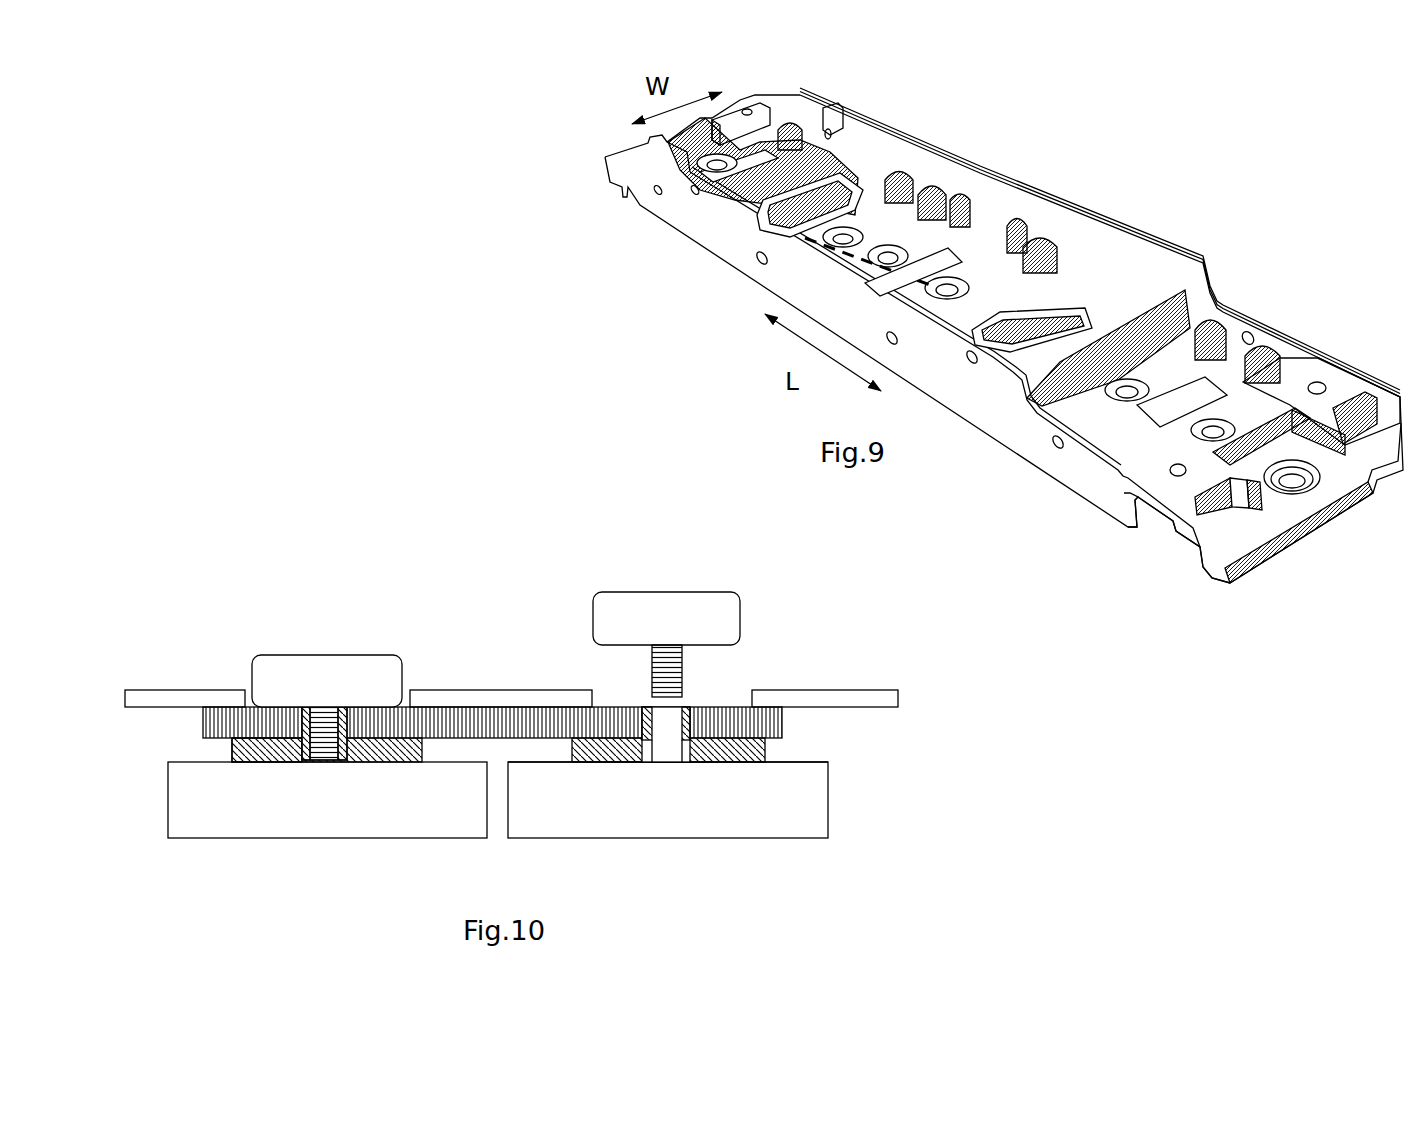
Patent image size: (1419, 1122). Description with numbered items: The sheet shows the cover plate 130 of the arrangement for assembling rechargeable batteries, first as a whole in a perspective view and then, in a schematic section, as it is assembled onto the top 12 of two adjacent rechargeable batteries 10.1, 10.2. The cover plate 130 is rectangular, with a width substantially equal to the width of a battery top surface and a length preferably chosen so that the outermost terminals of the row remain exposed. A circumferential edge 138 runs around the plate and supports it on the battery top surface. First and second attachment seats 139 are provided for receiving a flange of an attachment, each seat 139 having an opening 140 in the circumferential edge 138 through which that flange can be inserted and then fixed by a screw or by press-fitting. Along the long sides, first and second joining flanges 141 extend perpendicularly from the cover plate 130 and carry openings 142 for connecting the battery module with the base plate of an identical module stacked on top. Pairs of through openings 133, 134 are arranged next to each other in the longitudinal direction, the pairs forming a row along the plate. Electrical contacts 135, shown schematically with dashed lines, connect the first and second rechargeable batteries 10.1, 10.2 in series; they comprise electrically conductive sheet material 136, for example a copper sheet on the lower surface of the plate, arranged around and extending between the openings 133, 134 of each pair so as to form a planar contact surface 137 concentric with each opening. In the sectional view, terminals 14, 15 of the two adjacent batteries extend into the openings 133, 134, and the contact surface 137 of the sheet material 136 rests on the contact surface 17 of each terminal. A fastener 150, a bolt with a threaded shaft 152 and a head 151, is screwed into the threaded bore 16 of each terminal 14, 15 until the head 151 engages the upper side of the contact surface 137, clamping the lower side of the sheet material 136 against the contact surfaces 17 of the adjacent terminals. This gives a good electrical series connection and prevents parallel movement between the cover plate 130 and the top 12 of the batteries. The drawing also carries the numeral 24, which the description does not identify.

In FIG. 9, the mounting device 24 is at (1004, 318).
In FIG. 9, the cover plate 130 is at (1243, 176).
In FIG. 10, the cover plate 130 is at (187, 687).
In FIG. 9, the through opening 133 is at (975, 266).
In FIG. 10, the through opening 133 is at (690, 712).
In FIG. 9, the through opening 134 is at (850, 228).
In FIG. 10, the through opening 134 is at (300, 708).
In FIG. 9, the electrical contacts 135 is at (880, 228).
In FIG. 9, the electrically conductive sheet material 136 is at (900, 242).
In FIG. 10, the electrically conductive sheet material 136 is at (263, 720).
In FIG. 9, the planar contact surface 137 is at (1307, 477).
In FIG. 10, the planar contact surface 137 is at (377, 707).
In FIG. 9, the circumferential edge 138 is at (1101, 509).
In FIG. 9, the attachment seat 139 is at (1340, 373).
In FIG. 9, the opening 140 is at (1150, 532).
In FIG. 9, the joining flange 141 is at (1190, 258).
In FIG. 9, the openings 142 is at (758, 266).
In FIG. 10, the fastener 150 is at (650, 592).
In FIG. 10, the head 151 is at (333, 680).
In FIG. 10, the threaded shaft 152 is at (327, 733).
In FIG. 10, the threaded bore 16 is at (642, 722).
In FIG. 10, the contact surface 17 is at (610, 750).
In FIG. 10, the top 12 is at (777, 763).
In FIG. 10, the terminal 14 is at (733, 763).
In FIG. 10, the terminal 15 is at (370, 748).
In FIG. 10, the first rechargeable battery 10.1 is at (668, 800).
In FIG. 10, the second rechargeable battery 10.2 is at (327, 800).